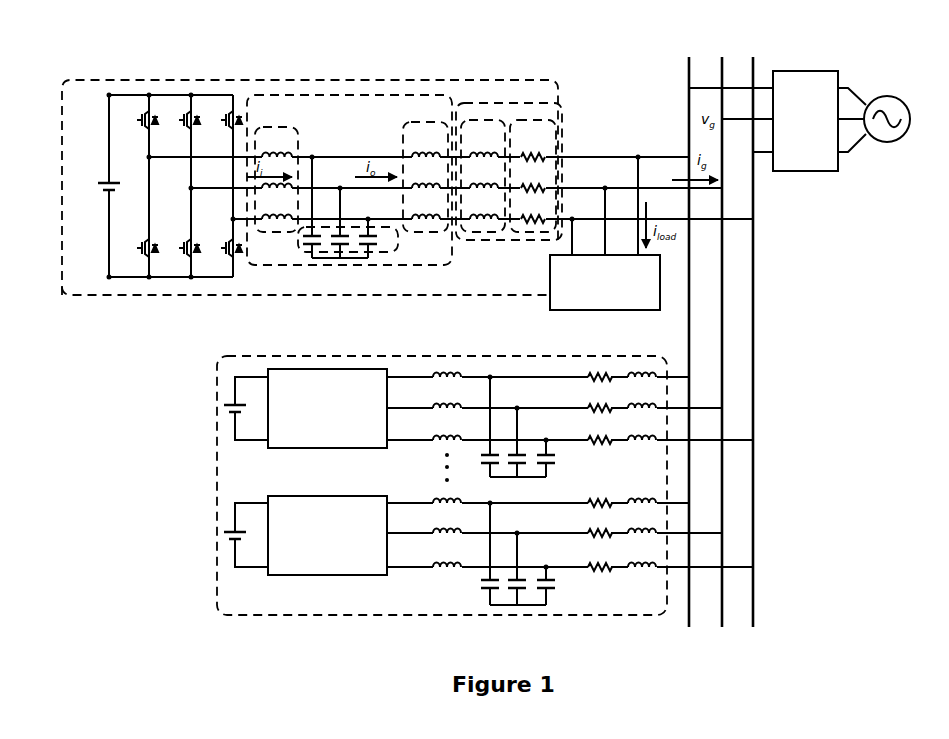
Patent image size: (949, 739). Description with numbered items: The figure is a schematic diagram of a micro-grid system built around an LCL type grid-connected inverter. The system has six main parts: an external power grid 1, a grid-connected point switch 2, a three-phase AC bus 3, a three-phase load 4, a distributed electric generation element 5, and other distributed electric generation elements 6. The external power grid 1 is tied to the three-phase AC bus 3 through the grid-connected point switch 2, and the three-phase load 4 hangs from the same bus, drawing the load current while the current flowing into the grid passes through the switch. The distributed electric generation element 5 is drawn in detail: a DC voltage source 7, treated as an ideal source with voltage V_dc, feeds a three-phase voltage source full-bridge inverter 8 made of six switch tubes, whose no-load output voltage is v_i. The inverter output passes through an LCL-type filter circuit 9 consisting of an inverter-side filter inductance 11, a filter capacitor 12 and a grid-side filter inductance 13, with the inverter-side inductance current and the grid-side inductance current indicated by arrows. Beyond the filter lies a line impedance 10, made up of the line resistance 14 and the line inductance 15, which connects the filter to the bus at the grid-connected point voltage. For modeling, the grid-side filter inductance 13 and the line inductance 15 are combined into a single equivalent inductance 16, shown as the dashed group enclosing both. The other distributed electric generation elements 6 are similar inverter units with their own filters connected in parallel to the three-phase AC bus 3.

The external power grid 1 is at (885, 143).
The grid-connected point switch 2 is at (805, 71).
The three-phase AC bus 3 is at (689, 70).
The three-phase load 4 is at (550, 310).
The distributed electric generation element 5 is at (530, 78).
The other distributed electric generation elements 6 is at (215, 440).
The DC voltage source 7 is at (105, 181).
The three-phase voltage source full-bridge inverter 8 is at (217, 94).
The LCL-type filter circuit 9 is at (410, 94).
The line impedance 10 is at (563, 148).
The inverter-side filter inductance 11 is at (297, 135).
The filter capacitor 12 is at (393, 248).
The grid-side filter inductance 13 is at (408, 122).
The line resistance 14 is at (545, 120).
The line inductance 15 is at (477, 233).
The combined inductance 16 is at (508, 118).